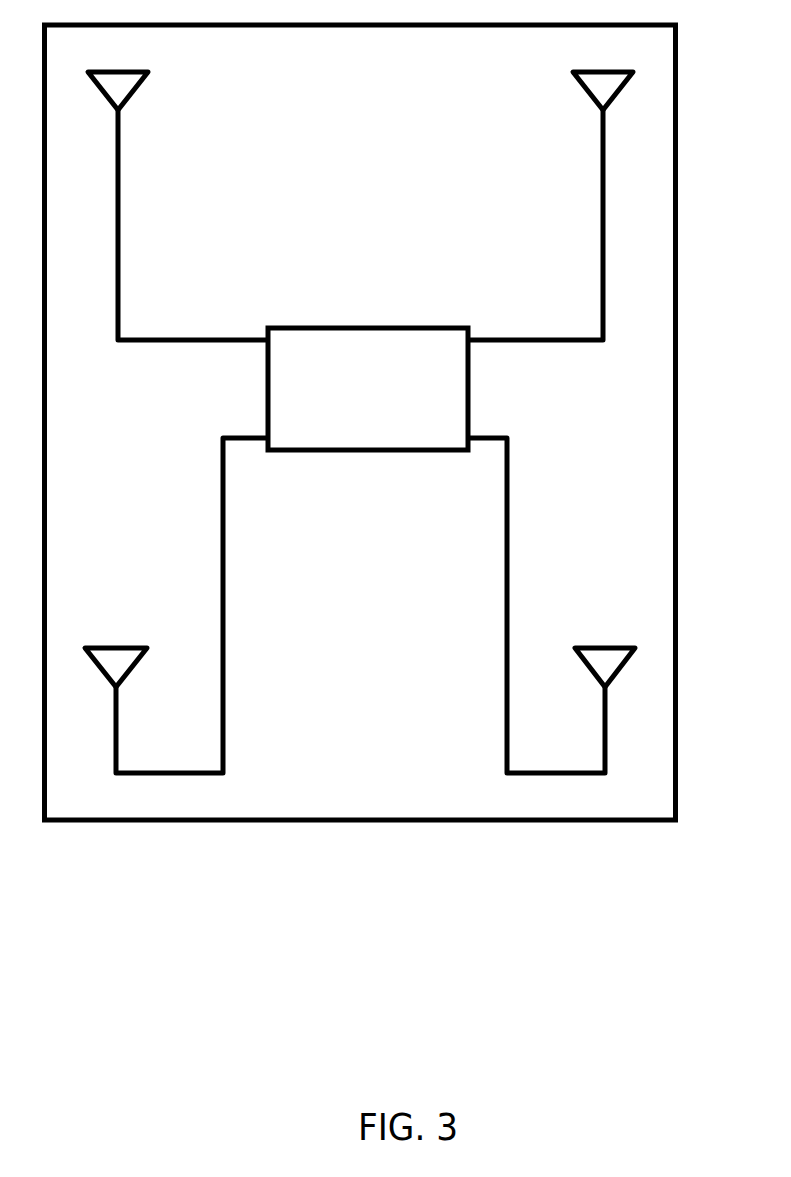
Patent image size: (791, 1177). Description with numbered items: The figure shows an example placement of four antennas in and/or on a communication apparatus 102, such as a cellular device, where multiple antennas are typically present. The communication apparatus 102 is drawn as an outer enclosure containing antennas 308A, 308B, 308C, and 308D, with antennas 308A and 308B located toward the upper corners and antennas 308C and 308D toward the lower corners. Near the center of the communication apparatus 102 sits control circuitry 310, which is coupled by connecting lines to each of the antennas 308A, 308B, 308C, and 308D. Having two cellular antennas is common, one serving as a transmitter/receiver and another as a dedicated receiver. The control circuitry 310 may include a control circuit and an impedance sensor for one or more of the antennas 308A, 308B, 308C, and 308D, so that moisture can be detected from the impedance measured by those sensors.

The communication apparatus 102 is at (115, 808).
The antenna 308A is at (108, 72).
The antenna 308B is at (600, 72).
The antenna 308C is at (117, 649).
The antenna 308D is at (603, 649).
The control circuitry 310 is at (300, 450).